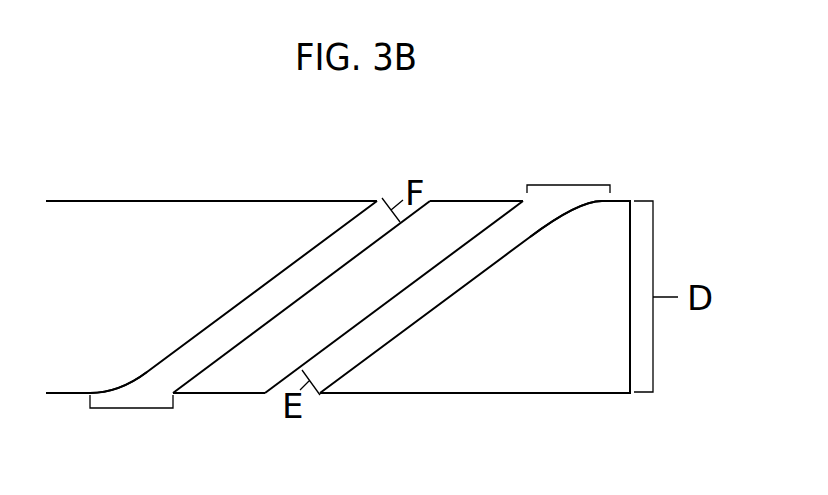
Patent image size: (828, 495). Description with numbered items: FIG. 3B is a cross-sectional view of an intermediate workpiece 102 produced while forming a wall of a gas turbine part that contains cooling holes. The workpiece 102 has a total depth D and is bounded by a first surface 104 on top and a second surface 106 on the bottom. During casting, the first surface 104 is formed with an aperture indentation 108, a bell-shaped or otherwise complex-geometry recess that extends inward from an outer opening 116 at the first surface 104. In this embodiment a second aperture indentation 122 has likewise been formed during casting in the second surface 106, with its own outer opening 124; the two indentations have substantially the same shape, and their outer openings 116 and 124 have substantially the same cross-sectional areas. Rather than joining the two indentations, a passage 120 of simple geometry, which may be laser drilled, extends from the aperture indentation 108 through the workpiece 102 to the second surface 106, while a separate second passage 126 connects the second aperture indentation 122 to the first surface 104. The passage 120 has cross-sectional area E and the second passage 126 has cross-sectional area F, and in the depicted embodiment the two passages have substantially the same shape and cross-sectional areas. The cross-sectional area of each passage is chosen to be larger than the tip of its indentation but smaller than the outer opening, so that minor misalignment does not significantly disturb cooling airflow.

The workpiece 102 is at (593, 380).
The first surface 104 is at (205, 200).
The second surface 106 is at (441, 395).
The aperture indentation 108 is at (578, 212).
The outer opening 116 is at (570, 185).
The passage 120 is at (428, 315).
The second aperture indentation 122 is at (133, 380).
The outer opening 124 is at (116, 408).
The second passage 126 is at (237, 305).